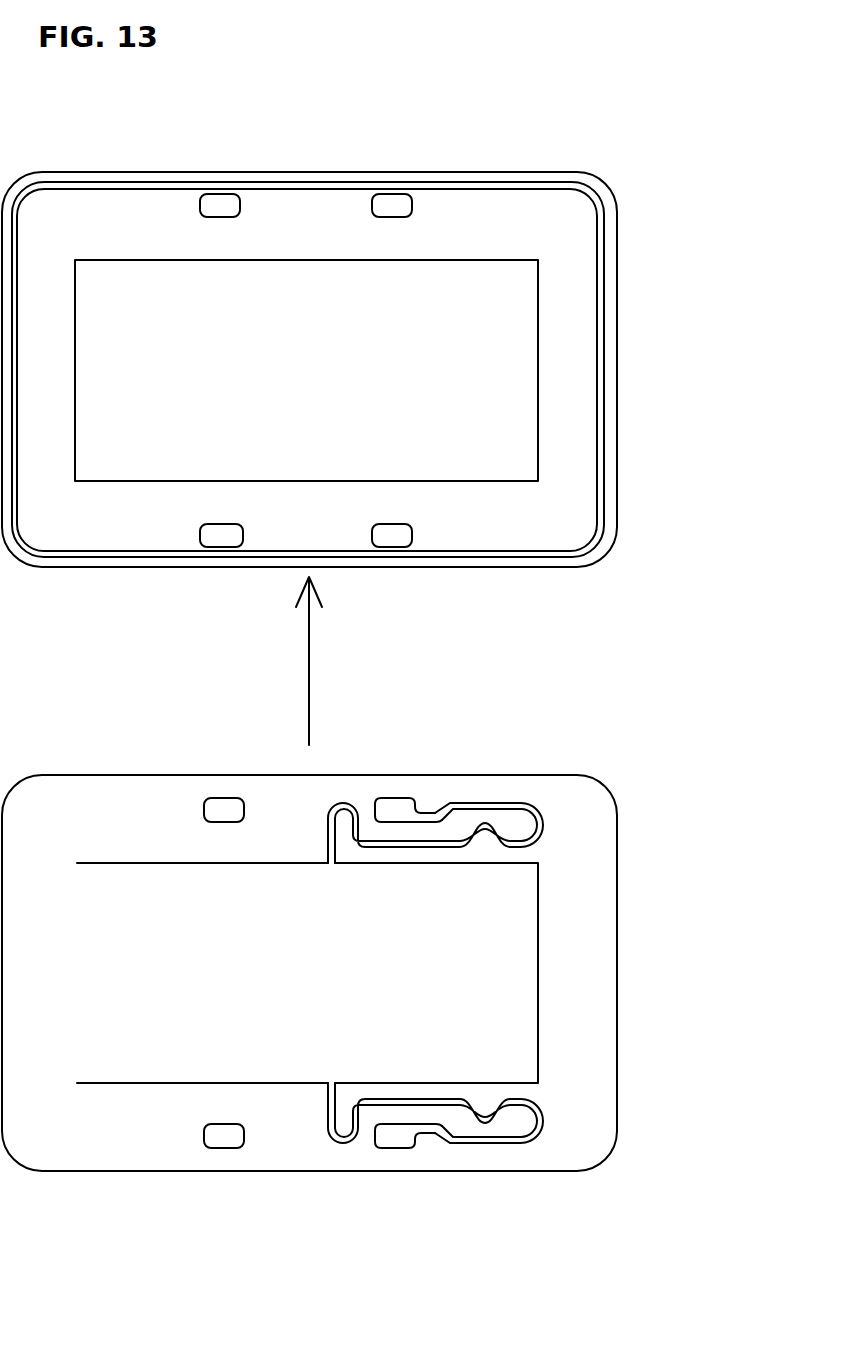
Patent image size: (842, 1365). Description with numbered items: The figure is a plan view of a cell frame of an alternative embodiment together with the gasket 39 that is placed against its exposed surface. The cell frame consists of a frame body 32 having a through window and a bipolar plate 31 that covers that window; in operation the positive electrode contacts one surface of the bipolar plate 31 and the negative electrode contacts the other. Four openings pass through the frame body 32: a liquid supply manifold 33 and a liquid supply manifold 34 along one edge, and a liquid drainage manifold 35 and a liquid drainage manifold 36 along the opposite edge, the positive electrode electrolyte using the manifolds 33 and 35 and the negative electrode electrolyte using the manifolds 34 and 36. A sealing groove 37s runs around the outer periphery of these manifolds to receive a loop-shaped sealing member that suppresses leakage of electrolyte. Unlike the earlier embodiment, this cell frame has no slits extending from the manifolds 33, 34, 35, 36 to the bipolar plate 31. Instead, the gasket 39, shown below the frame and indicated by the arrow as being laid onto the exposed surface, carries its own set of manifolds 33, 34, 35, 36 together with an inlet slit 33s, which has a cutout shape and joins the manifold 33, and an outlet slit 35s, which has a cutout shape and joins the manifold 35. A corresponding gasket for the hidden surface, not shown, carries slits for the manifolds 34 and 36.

The bipolar plate 31 is at (181, 293).
The frame body 32 is at (590, 186).
The liquid supply manifold 33 is at (385, 548).
The inlet slit 33s is at (468, 1143).
The liquid supply manifold 34 is at (215, 548).
The liquid drainage manifold 35 is at (395, 193).
The outlet slit 35s is at (478, 802).
The liquid drainage manifold 36 is at (213, 193).
The sealing groove 37s is at (602, 313).
The gasket 39 is at (582, 808).